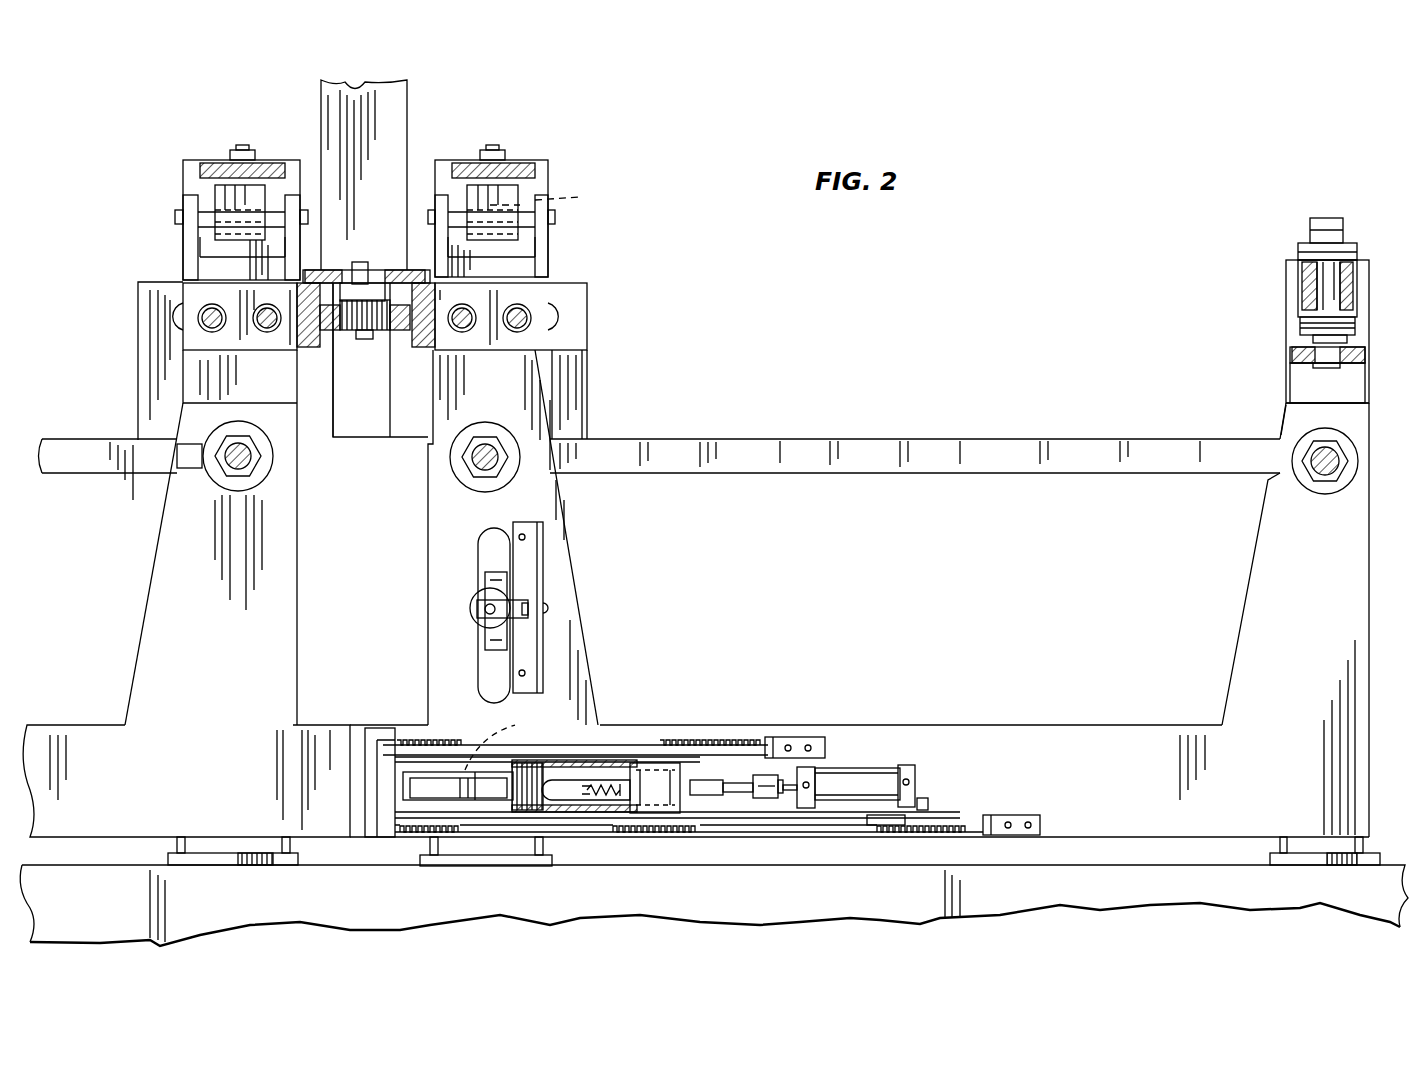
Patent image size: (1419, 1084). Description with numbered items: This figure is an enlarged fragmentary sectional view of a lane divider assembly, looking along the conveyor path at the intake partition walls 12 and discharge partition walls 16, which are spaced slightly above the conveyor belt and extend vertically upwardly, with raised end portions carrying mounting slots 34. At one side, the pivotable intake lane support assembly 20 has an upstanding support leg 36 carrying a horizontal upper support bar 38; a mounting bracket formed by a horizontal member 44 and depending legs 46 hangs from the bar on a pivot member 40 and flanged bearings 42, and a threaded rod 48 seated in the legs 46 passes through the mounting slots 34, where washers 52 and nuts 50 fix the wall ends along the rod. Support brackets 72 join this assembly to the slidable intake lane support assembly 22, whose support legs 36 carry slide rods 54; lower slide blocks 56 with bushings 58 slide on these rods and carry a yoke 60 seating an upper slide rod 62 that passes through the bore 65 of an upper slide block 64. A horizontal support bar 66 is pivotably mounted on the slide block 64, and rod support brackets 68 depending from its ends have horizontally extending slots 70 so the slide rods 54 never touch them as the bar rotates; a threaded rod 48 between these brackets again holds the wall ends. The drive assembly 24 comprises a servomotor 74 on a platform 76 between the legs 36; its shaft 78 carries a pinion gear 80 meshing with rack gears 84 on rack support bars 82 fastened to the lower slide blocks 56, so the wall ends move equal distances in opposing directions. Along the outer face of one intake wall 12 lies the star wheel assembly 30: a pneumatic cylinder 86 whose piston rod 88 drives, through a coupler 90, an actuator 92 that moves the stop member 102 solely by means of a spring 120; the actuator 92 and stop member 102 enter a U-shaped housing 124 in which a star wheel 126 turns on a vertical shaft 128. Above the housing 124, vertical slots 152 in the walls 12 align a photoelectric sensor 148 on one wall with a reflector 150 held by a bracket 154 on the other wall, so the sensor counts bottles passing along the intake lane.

The intake partition walls 12 is at (1368, 773).
The discharge partition walls 16 is at (140, 615).
The pivotable intake lane support assembly 20 is at (1286, 275).
The slidable intake lane support assembly 22 is at (536, 193).
The drive assembly 24 is at (412, 257).
The star wheel assembly 30 is at (690, 786).
The mounting slots 34 is at (1266, 480).
The support legs 36 is at (1295, 283).
The upper support bars 38 is at (1352, 293).
The pivot member 40 is at (1323, 218).
The flanged bearings 42 is at (1305, 243).
The horizontal member 44 is at (1300, 354).
The depending legs 46 is at (1303, 385).
The threaded rod 48 is at (1315, 452).
The nuts 50 is at (1320, 478).
The washers 52 is at (1285, 491).
The slide rods 54 is at (520, 322).
The lower slide blocks 56 is at (210, 292).
The bushings 58 is at (536, 355).
The yoke 60 is at (540, 250).
The upper slide rod 62 is at (535, 218).
The upper slide block 64 is at (545, 190).
The bore 65 is at (558, 196).
The horizontal support bar 66 is at (240, 165).
The rod support brackets 68 is at (214, 191).
The horizontally extending slots 70 is at (535, 305).
The support brackets 72 is at (890, 445).
The servomotor 74 is at (390, 135).
The platform 76 is at (400, 270).
The shaft 78 is at (360, 270).
The pinion gear 80 is at (352, 340).
The rack support bars 82 is at (420, 340).
The rack gears 84 is at (385, 345).
The pneumatic cylinder 86 is at (860, 778).
The piston rod 88 is at (790, 795).
The coupler 90 is at (765, 800).
The actuator 92 is at (712, 800).
The stop member 102 is at (550, 800).
The spring 120 is at (605, 800).
The housing 124 is at (660, 770).
The star wheel 126 is at (425, 805).
The vertical shaft 128 is at (511, 738).
The photoelectric sensor 148 is at (488, 580).
The reflector 150 is at (488, 622).
The vertical slots 152 is at (488, 668).
The bracket 154 is at (494, 537).